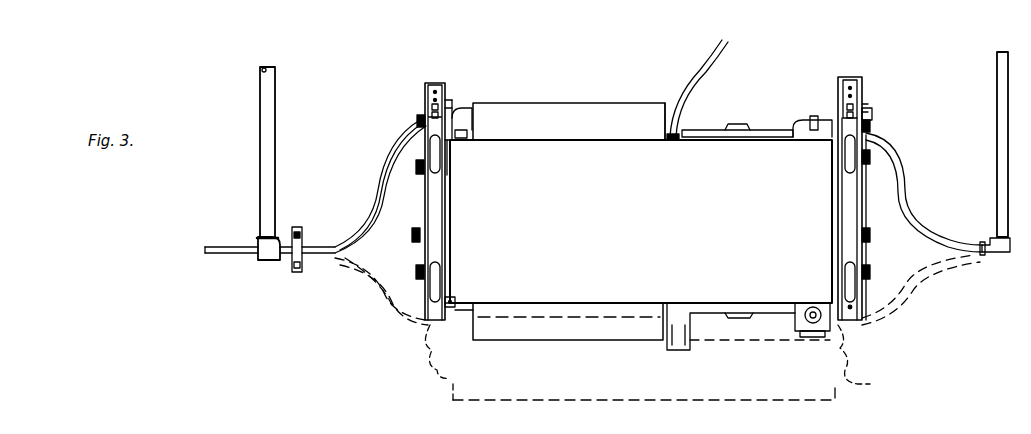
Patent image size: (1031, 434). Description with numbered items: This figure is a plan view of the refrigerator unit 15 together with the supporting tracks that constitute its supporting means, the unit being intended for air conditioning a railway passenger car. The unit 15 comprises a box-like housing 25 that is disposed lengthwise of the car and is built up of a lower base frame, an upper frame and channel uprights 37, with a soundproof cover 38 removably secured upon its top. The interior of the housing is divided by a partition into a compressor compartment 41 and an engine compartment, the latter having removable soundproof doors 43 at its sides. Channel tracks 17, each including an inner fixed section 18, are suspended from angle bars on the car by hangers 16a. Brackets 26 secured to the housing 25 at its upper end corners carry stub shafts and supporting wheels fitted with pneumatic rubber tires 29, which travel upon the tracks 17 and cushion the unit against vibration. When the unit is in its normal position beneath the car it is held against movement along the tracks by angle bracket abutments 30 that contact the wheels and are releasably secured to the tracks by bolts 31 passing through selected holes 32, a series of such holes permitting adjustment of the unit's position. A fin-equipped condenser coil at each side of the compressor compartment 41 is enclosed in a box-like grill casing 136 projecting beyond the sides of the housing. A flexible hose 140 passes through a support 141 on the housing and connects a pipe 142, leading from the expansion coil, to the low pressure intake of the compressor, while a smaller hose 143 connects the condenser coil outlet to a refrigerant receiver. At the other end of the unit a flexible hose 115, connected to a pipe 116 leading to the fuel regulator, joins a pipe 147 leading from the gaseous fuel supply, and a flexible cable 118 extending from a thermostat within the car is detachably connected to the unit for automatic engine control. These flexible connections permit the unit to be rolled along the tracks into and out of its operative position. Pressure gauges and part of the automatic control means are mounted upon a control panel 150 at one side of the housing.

The refrigerator unit 15 is at (537, 100).
The hangers 16a is at (414, 226).
The channel tracks 17 is at (864, 214).
The inner fixed section 18 is at (438, 218).
The housing 25 is at (620, 138).
The brackets 26 is at (452, 156).
The pneumatic rubber tires 29 is at (442, 172).
The angle bracket abutments 30 is at (423, 113).
The bolts 31 is at (447, 98).
The holes 32 is at (436, 92).
The channel uprights 37 is at (490, 305).
The cover 38 is at (612, 236).
The compressor compartment 41 is at (463, 112).
The removable doors 43 is at (708, 134).
The right hose 115 is at (906, 170).
The fitting 116 is at (802, 118).
The cable 118 is at (702, 66).
The casing 136 is at (603, 106).
The flexible hose 140 is at (392, 140).
The support 141 is at (304, 240).
The pipe 142 is at (276, 122).
The smaller hose 143 is at (378, 275).
The pipe 147 is at (997, 110).
The control panel 150 is at (800, 303).